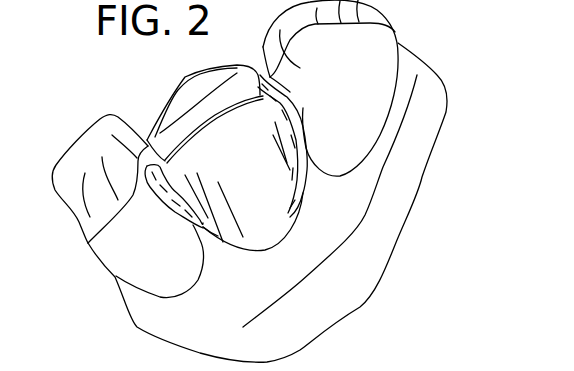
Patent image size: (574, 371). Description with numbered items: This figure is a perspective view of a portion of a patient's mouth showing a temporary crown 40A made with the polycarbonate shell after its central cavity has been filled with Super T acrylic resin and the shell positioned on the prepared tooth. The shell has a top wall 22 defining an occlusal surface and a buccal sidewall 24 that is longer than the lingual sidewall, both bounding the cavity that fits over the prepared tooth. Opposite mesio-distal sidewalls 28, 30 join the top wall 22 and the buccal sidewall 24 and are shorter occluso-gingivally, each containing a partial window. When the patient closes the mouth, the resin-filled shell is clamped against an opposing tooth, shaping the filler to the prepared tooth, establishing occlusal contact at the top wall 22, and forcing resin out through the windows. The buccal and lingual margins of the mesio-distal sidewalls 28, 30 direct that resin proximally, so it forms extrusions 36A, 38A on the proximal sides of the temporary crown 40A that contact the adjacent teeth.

The top wall 22 is at (190, 93).
The buccal sidewall 24 is at (267, 217).
The mesio-distal sidewall 28 is at (303, 200).
The mesio-distal sidewall 30 is at (218, 236).
The extrusion 36A is at (303, 108).
The extrusion 38A is at (157, 207).
The temporary crown 40A is at (152, 108).